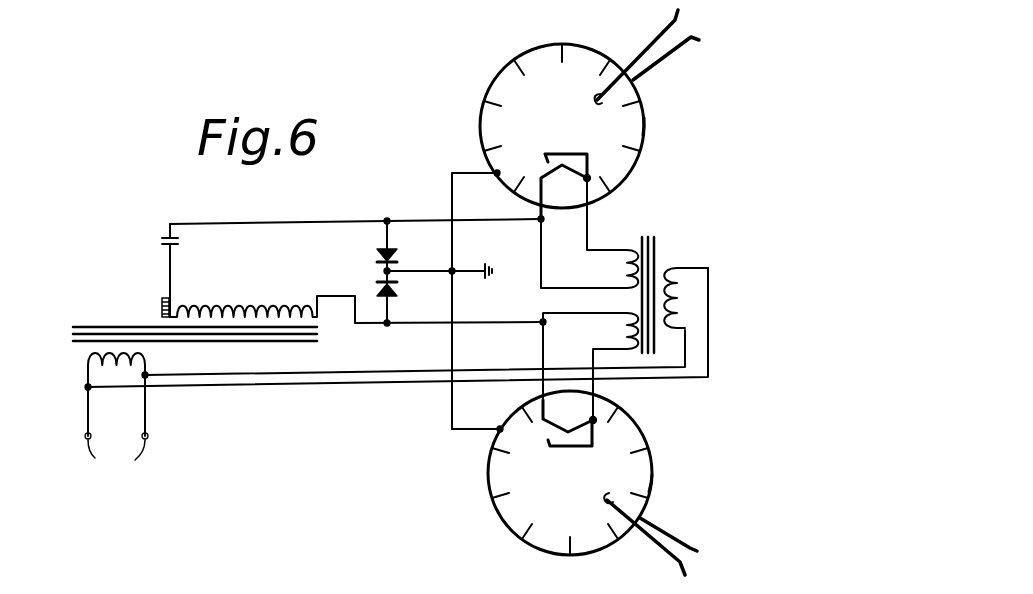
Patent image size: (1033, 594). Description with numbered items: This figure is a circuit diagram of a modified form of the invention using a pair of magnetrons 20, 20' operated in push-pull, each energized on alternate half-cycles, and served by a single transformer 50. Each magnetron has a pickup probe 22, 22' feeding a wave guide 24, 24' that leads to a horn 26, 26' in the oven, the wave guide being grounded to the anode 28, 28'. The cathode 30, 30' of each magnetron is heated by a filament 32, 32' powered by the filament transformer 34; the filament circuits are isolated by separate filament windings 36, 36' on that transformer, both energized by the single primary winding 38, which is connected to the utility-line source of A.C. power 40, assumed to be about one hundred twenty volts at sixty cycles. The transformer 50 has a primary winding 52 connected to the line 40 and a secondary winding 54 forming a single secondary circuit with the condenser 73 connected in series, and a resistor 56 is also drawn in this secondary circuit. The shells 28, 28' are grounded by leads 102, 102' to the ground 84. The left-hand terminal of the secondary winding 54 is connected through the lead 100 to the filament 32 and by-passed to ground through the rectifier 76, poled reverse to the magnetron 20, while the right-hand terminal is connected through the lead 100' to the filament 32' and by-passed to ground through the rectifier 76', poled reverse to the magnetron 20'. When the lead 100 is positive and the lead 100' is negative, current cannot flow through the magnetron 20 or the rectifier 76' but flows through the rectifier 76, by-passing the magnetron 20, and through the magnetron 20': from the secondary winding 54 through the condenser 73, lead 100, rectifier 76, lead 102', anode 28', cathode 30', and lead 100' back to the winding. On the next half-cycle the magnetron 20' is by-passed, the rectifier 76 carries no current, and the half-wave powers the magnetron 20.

The magnetron 20 is at (545, 126).
The pickup probe 22 is at (571, 108).
The wave guide 24 is at (637, 55).
The horn 26 is at (659, 41).
The anode 28 is at (666, 128).
The cathode 30 is at (573, 149).
The filament 32 is at (566, 192).
The filament transformer 34 is at (674, 222).
The secondary winding 36 is at (597, 270).
The filament winding 36' is at (598, 331).
The primary winding 38 is at (688, 310).
The source of A.C. power 40 is at (116, 451).
The transformer 50 is at (58, 337).
The primary winding 52 is at (137, 362).
The secondary winding 54 is at (230, 307).
The resistor 56 is at (160, 307).
The condenser 73 is at (162, 238).
The rectifier 76 is at (369, 272).
The rectifier 76' is at (365, 283).
The ground 84 is at (470, 270).
The lead 100 is at (357, 206).
The lead 100' is at (429, 329).
The lead 102 is at (476, 299).
The lead 102' is at (480, 385).
The magnetron 20' is at (530, 473).
The pickup probe 22' is at (653, 478).
The wave guide 24' is at (657, 529).
The horn 26' is at (677, 532).
The anode 28' is at (674, 450).
The cathode 30' is at (569, 449).
The filament 32' is at (604, 410).